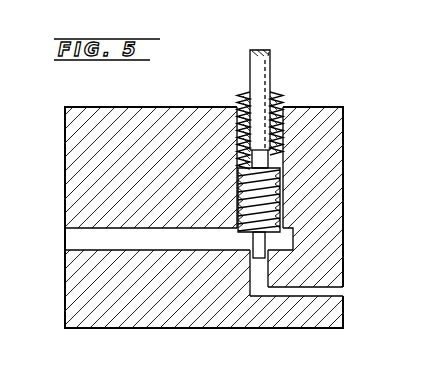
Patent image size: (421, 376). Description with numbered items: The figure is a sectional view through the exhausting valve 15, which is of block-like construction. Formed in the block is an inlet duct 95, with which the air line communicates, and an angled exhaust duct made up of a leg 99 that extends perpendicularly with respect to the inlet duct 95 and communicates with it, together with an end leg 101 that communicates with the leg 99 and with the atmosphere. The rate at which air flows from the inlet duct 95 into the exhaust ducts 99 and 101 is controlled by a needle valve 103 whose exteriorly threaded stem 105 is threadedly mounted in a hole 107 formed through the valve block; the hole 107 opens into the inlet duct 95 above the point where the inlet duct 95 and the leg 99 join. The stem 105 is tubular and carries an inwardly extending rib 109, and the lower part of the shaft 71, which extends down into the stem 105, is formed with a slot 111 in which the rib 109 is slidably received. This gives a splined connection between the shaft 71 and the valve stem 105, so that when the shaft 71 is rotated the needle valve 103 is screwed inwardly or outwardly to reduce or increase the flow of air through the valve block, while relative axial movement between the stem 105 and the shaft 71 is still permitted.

The valve 15 is at (333, 233).
The shaft 71 is at (250, 66).
The inlet duct 95 is at (80, 238).
The leg 99 is at (257, 277).
The end leg 101 is at (325, 292).
The needle valve 103 is at (260, 242).
The stem 105 is at (280, 182).
The hole 107 is at (283, 150).
The rib 109 is at (283, 152).
The slot 111 is at (268, 82).